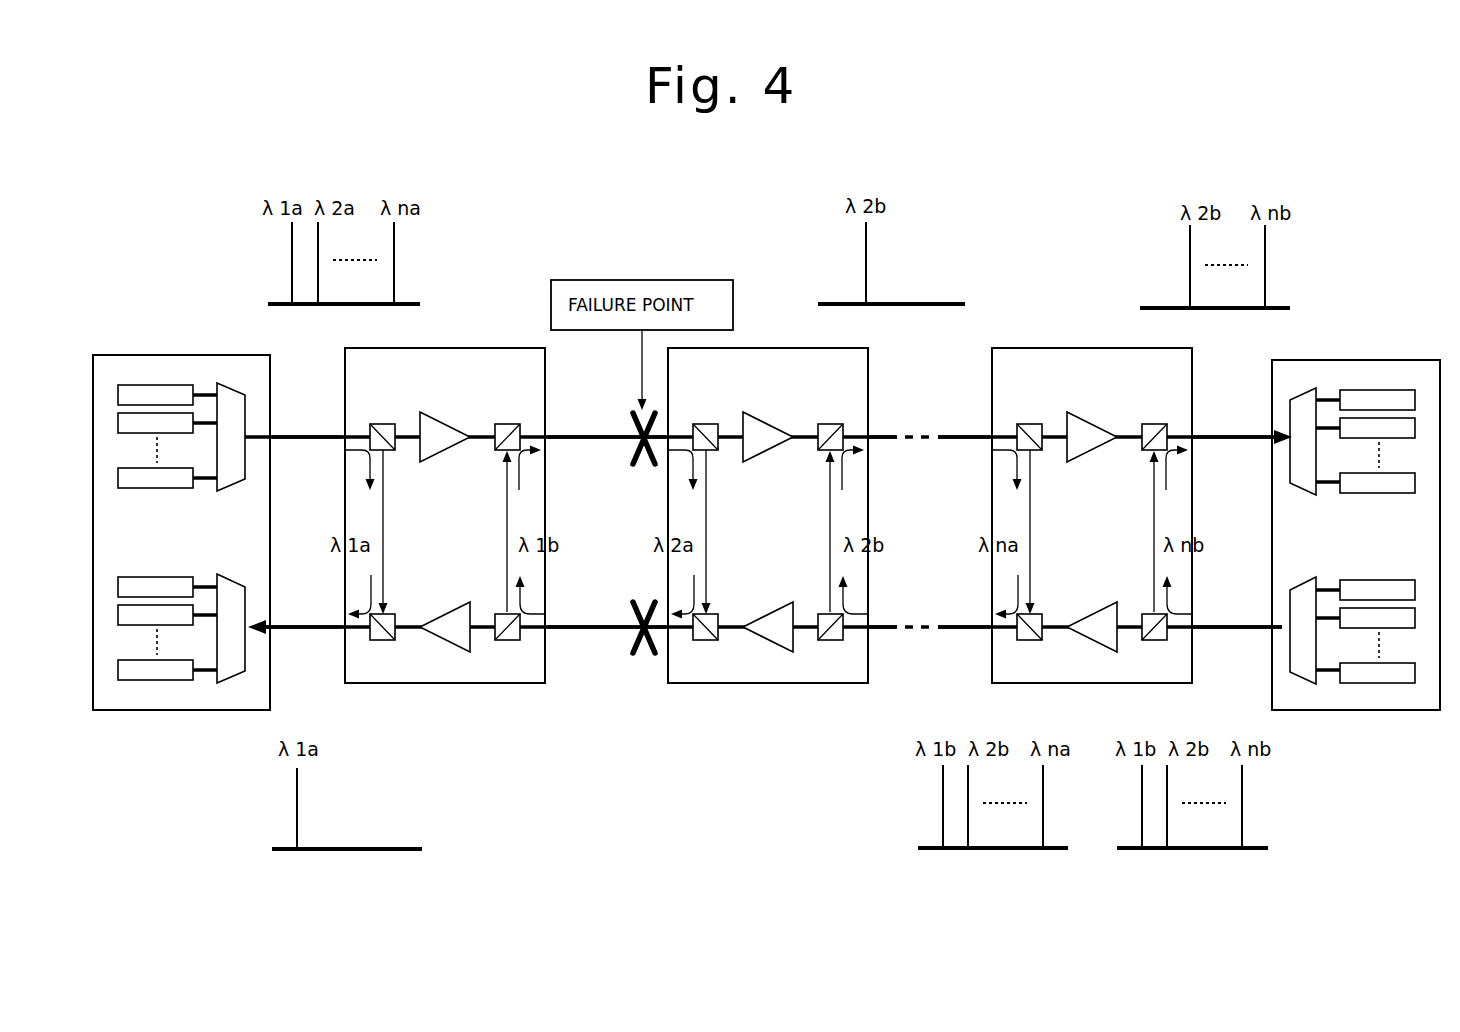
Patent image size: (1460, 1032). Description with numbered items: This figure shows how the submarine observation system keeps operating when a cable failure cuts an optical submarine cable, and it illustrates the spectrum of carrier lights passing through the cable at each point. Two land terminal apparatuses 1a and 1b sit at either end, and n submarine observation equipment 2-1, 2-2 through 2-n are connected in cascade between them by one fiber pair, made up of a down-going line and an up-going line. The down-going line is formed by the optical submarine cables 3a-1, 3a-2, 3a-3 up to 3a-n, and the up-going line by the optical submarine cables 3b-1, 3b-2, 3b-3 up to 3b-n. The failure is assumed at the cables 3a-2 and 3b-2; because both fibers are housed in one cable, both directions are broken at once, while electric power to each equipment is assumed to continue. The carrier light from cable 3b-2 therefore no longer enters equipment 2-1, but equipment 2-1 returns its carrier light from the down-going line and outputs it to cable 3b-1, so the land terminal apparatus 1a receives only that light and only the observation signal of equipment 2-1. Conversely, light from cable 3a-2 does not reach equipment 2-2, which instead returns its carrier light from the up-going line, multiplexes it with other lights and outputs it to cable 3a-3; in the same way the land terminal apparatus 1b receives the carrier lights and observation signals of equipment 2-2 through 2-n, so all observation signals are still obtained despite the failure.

The land terminal apparatus 1a is at (160, 355).
The land terminal apparatus 1b is at (1325, 360).
The submarine observation equipment 2-1 is at (433, 348).
The submarine observation equipment 2-2 is at (755, 348).
The submarine observation equipment 2-n is at (1078, 348).
The optical submarine cable 3a-1 is at (340, 324).
The optical submarine cable 3a-2 is at (566, 437).
The optical submarine cable 3a-3 is at (898, 328).
The optical submarine cable 3a-n is at (955, 437).
The optical submarine cable 3b-1 is at (316, 728).
The optical submarine cable 3b-2 is at (580, 627).
The optical submarine cable 3b-3 is at (893, 627).
The optical submarine cable 3b-n is at (984, 726).